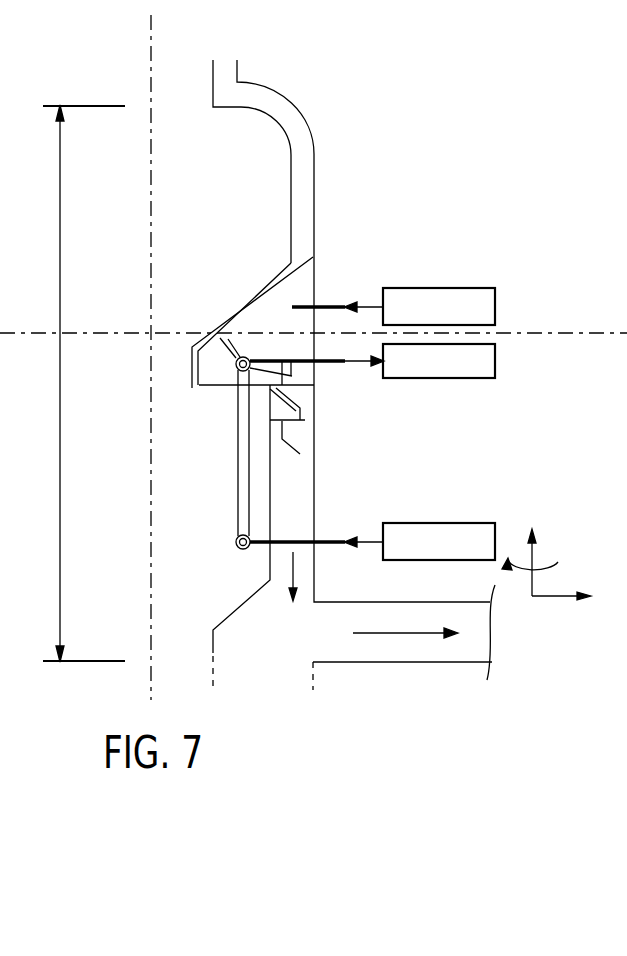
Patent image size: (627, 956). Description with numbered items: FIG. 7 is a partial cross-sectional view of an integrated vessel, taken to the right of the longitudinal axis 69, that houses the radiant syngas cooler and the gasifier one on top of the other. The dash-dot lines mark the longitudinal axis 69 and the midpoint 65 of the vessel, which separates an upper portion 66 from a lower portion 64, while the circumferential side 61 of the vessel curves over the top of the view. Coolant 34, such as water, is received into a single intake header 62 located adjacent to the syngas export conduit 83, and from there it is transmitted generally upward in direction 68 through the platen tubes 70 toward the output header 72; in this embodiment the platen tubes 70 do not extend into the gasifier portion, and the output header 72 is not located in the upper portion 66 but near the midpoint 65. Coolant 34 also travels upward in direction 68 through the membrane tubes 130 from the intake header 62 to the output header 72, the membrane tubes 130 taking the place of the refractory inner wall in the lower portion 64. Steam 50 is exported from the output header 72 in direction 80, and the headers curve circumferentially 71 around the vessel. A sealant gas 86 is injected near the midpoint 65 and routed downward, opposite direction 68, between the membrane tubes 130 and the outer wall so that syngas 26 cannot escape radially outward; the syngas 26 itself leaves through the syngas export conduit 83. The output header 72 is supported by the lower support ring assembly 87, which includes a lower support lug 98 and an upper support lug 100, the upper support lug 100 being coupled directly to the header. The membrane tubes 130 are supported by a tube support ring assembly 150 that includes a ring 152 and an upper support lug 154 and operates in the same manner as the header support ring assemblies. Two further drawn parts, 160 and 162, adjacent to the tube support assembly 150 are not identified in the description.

The circumferential side 61 is at (238, 72).
The longitudinal axis 69 is at (151, 150).
The midpoint 65 is at (128, 332).
The upper portion 66 is at (60, 258).
The lower portion 64 is at (60, 528).
The output header 72 is at (222, 335).
The upper support lug 100 is at (251, 356).
The lower support ring assembly 87 is at (279, 352).
The sealant gas 86 is at (440, 288).
The steam 50 is at (440, 378).
The coolant 34 is at (440, 523).
The lower support lug 98 is at (273, 387).
The nozzle plate 162 is at (304, 398).
The upper support lug 154 is at (277, 410).
The nozzle body 160 is at (303, 420).
The ring 152 is at (292, 444).
The tube support ring assembly 150 is at (306, 457).
The platen tubes 70 is at (238, 477).
The membrane tubes 130 is at (272, 497).
The intake header 62 is at (236, 552).
The direction 68 is at (532, 549).
The direction 80 is at (575, 597).
The circumferential direction 71 is at (518, 580).
The syngas 26 is at (370, 633).
The syngas export conduit 83 is at (463, 648).